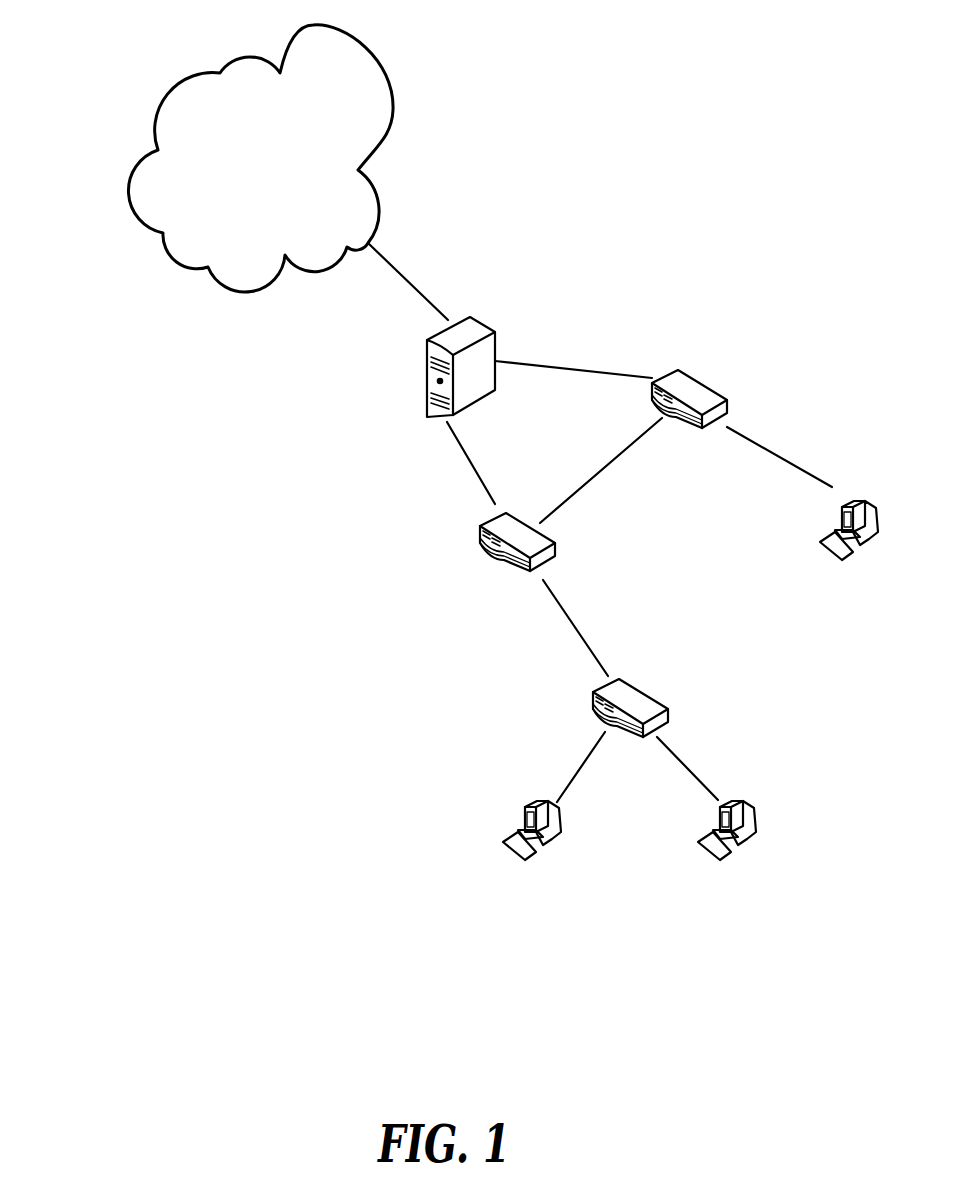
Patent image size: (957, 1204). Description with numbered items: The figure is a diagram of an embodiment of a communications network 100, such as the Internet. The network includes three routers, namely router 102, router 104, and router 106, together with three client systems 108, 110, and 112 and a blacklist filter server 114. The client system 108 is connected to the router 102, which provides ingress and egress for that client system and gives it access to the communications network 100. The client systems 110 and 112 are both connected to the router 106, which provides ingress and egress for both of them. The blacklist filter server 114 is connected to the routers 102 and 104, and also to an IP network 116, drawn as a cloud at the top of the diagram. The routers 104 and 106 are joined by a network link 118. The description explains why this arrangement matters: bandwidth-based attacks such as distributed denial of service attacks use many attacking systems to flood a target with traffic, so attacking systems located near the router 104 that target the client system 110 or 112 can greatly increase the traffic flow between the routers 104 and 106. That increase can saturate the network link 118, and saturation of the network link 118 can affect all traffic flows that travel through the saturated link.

The communications network 100 is at (186, 348).
The router 102 is at (700, 382).
The router 104 is at (562, 557).
The router 106 is at (602, 688).
The client system 108 is at (843, 505).
The client system 110 is at (525, 805).
The client system 112 is at (722, 805).
The blacklist filter server 114 is at (440, 333).
The IP network 116 is at (360, 170).
The network link 118 is at (578, 632).